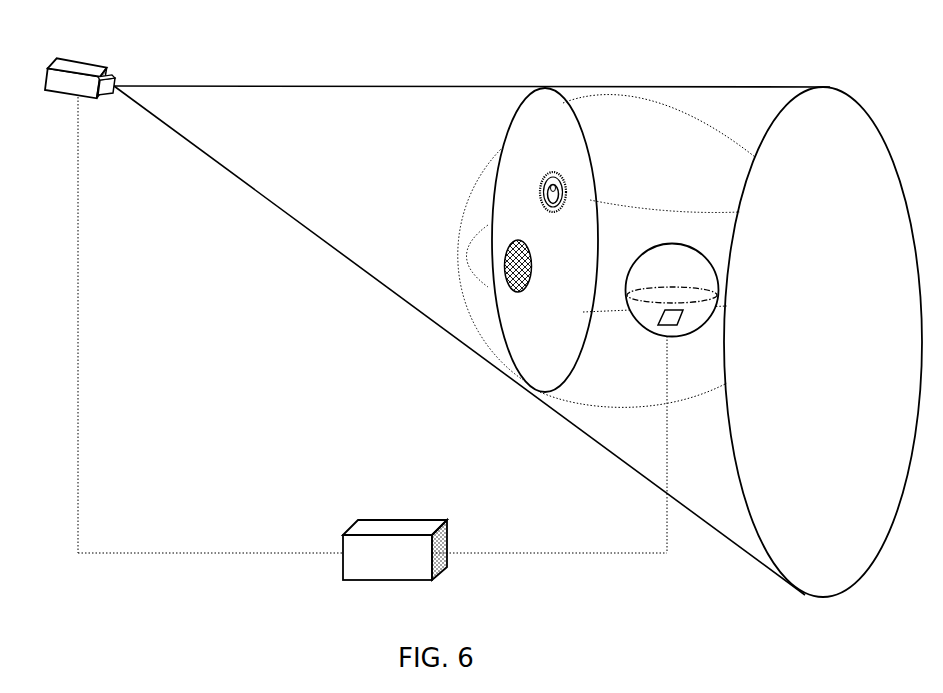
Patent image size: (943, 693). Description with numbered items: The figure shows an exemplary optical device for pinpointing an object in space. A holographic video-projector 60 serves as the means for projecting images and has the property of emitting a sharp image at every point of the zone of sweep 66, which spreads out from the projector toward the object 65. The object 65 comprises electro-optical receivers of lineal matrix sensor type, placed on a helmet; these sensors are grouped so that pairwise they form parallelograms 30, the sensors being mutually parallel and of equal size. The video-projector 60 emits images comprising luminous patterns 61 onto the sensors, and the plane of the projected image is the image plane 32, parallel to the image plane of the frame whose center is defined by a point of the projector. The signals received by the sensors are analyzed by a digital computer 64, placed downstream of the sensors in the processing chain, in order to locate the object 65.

The holographic video-projector 60 is at (105, 55).
The image plane 32 is at (553, 104).
The luminous patterns 61 is at (535, 186).
The zone of sweep 66 is at (462, 322).
The parallelograms 30 is at (685, 320).
The object 65 is at (678, 343).
The digital computer 64 is at (333, 578).